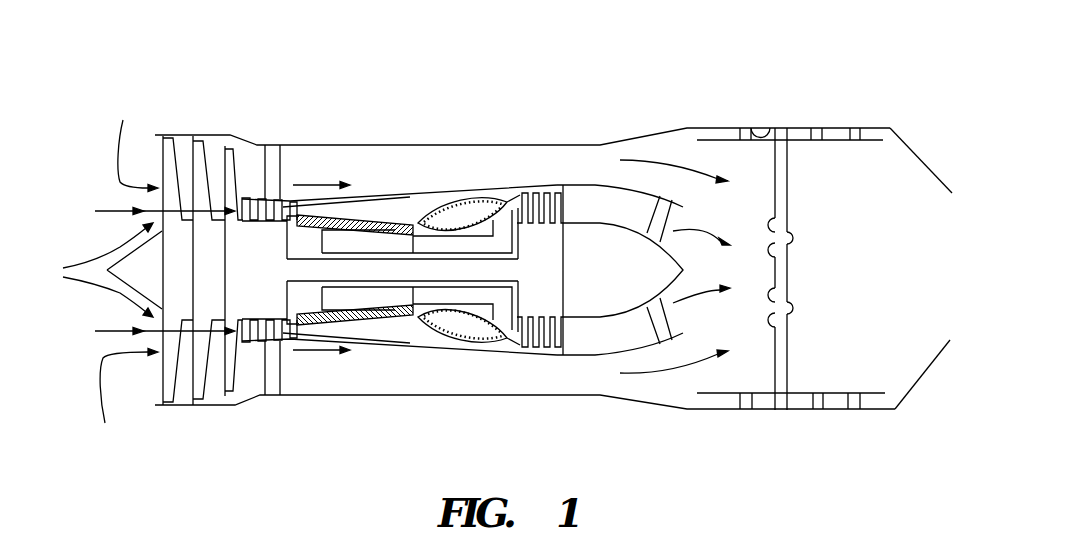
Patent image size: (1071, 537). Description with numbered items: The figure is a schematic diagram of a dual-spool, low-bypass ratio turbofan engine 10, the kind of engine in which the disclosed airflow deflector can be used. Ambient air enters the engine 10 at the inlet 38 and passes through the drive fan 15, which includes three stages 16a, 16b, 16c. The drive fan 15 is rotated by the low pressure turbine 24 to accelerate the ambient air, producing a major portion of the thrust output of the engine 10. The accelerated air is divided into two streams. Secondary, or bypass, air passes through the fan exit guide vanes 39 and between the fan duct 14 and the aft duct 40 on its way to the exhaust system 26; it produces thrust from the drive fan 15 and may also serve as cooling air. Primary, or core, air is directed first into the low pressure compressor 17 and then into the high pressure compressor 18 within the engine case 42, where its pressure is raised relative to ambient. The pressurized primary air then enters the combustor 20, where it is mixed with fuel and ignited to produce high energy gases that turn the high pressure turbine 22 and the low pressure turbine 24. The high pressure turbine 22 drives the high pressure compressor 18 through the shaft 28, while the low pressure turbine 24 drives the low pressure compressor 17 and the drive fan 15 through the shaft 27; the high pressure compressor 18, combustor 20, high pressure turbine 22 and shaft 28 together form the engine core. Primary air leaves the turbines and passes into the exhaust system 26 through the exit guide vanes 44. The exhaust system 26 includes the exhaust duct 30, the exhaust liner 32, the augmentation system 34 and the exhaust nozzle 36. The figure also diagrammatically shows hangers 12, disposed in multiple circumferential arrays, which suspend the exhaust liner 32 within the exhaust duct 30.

The turbofan engine 10 is at (236, 78).
The hangers 12 is at (744, 128).
The fan duct 14 is at (357, 145).
The drive fan 15 is at (209, 270).
The fan stage 16a is at (175, 406).
The fan stage 16b is at (208, 406).
The fan stage 16c is at (240, 406).
The low pressure compressor 17 is at (262, 352).
The high pressure compressor 18 is at (348, 298).
The combustor 20 is at (447, 347).
The high pressure turbine 22 is at (505, 305).
The low pressure turbine 24 is at (512, 310).
The exhaust system 26 is at (781, 115).
The shaft 27 is at (477, 268).
The shaft 28 is at (478, 305).
The exhaust duct 30 is at (754, 128).
The exhaust liner 32 is at (884, 128).
The augmentation system 34 is at (795, 234).
The exhaust nozzle 36 is at (930, 380).
The inlet 38 is at (97, 270).
The fan exit guide vanes 39 is at (275, 145).
The aft duct 40 is at (420, 195).
The engine case 42 is at (410, 217).
The exit guide vanes 44 is at (643, 213).